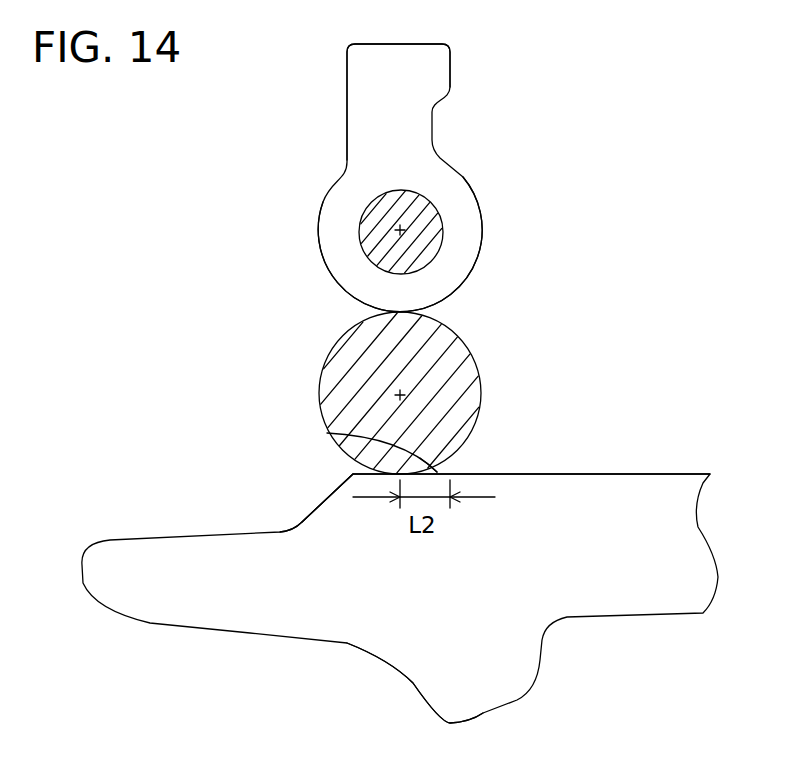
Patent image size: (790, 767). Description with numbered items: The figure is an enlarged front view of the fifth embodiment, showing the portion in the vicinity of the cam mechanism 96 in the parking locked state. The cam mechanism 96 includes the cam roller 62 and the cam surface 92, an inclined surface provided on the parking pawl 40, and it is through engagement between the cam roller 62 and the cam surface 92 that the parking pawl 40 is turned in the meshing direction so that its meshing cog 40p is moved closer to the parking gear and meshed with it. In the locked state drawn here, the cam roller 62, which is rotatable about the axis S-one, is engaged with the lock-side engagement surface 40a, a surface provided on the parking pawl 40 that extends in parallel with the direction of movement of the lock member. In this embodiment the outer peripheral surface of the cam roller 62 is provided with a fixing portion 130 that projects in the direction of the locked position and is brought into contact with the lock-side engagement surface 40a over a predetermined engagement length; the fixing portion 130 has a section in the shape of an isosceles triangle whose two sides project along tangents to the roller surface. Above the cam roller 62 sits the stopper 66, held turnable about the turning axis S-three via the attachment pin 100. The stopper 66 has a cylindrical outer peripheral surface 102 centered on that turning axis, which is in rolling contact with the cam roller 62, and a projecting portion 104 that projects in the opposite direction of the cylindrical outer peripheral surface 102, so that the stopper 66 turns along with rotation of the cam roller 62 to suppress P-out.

The stopper 66 is at (476, 146).
The projecting portion 104 is at (368, 114).
The cylindrical outer peripheral surface 102 is at (473, 279).
The attachment pin 100 is at (372, 222).
The cam roller 62 is at (443, 375).
The parking pawl 40 is at (618, 597).
The meshing cog 40p is at (430, 678).
The cam surface 92 is at (318, 507).
The cam mechanism 96 is at (302, 474).
The lock-side engagement surface 40a is at (390, 433).
The fixing portion 130 is at (442, 466).